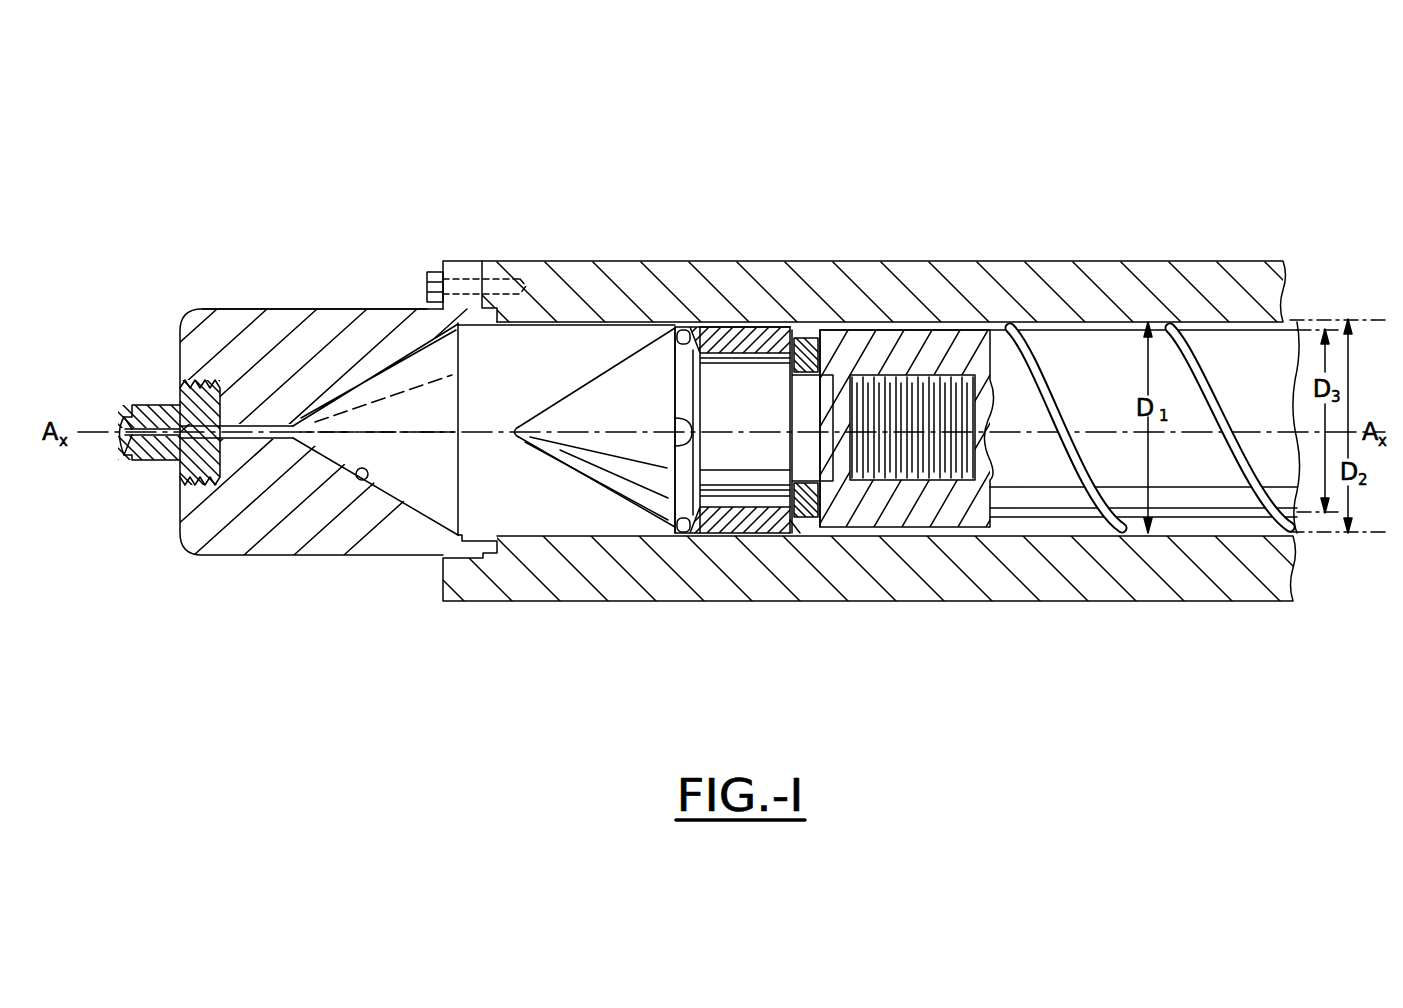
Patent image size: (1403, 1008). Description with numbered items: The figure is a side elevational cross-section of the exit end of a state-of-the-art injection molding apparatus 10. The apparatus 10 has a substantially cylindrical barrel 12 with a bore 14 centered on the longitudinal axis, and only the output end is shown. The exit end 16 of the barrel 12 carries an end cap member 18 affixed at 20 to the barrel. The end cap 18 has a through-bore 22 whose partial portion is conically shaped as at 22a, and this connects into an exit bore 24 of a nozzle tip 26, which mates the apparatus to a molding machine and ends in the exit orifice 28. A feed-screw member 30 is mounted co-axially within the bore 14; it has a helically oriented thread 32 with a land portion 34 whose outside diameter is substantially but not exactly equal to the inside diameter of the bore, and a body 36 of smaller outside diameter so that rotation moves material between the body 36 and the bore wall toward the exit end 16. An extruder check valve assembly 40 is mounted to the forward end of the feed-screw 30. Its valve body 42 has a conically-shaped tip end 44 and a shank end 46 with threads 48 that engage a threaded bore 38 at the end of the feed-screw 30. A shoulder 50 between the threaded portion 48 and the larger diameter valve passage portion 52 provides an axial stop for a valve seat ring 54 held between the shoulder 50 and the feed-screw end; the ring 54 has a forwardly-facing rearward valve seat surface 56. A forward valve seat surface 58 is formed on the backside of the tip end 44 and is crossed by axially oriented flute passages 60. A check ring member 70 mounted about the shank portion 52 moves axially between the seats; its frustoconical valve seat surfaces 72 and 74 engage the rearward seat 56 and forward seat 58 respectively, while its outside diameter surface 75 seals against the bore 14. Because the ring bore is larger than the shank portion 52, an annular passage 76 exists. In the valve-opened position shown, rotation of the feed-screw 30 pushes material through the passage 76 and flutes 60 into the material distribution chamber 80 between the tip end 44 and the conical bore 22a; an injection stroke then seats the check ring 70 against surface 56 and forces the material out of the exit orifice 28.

The injection molding apparatus 10 is at (1061, 247).
The barrel 12 is at (1208, 259).
The bore 14 is at (580, 322).
The exit end 16 is at (232, 309).
The end cap member 18 is at (395, 307).
The affixing location 20 is at (483, 290).
The through-bore 22 is at (263, 433).
The conically-shaped bore portion 22a is at (369, 482).
The exit bore 24 is at (155, 404).
The nozzle tip 26 is at (163, 461).
The exit orifice 28 is at (116, 438).
The feed-screw member 30 is at (1047, 519).
The helically oriented thread 32 is at (1095, 512).
The land portion 34 is at (865, 323).
The feed-screw body 36 is at (1227, 510).
The threaded bore 38 is at (931, 495).
The extruder check valve assembly 40 is at (592, 507).
The valve body 42 is at (575, 453).
The conically-shaped tip end 44 is at (625, 507).
The shank end 46 is at (729, 516).
The threads 48 is at (870, 500).
The shoulder 50 is at (818, 330).
The valve passage portion 52 is at (755, 449).
The valve seat ring 54 is at (810, 505).
The rearward valve seat surface 56 is at (784, 520).
The forward valve seat surface 58 is at (661, 347).
The flute passages 60 is at (680, 517).
The check ring member 70 is at (727, 332).
The frustoconical valve seat surface 72 is at (800, 328).
The frustoconical valve seat surface 74 is at (683, 338).
The outside diameter surface 75 is at (761, 325).
The annular passage 76 is at (730, 358).
The material distribution chamber 80 is at (391, 414).